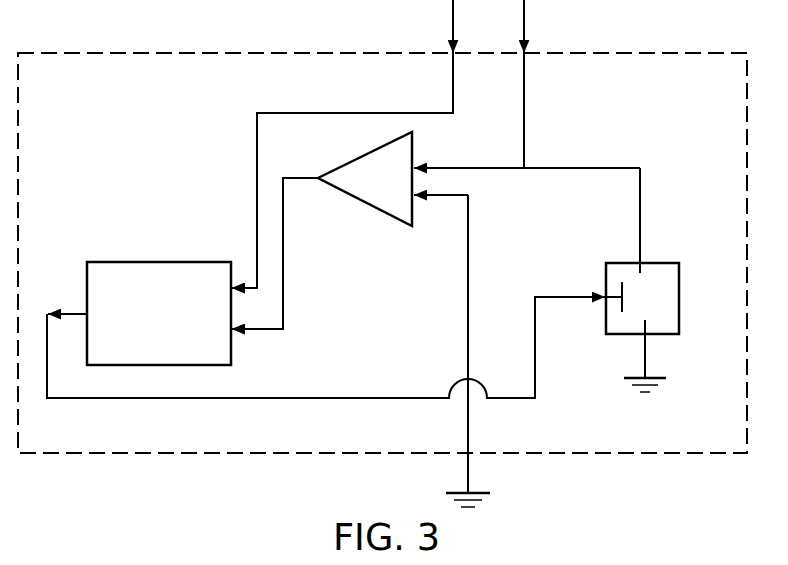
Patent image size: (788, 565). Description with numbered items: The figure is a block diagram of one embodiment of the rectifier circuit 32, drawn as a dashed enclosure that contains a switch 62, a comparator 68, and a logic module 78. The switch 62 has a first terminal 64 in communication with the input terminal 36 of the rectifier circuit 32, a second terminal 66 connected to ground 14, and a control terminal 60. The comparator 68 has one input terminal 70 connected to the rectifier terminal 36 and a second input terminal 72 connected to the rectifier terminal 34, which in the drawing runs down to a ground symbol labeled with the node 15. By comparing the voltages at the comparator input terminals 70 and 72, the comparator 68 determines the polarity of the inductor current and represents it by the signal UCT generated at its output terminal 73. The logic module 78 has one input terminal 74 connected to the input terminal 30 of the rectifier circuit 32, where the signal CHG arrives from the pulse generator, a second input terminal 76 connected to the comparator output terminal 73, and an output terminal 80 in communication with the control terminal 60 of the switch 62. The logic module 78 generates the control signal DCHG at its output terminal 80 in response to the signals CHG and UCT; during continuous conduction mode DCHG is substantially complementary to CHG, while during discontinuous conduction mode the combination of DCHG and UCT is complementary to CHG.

The ground 14 is at (658, 390).
The ground voltage node VGNG 15 is at (483, 501).
The input terminal of the rectifier circuit 30 is at (452, 50).
The rectifier circuit 32 is at (53, 443).
The rectifier terminal 34 is at (466, 455).
The input terminal of the rectifier circuit 36 is at (525, 50).
The control terminal 60 is at (605, 299).
The switch 62 is at (657, 310).
The first terminal 64 is at (641, 262).
The second terminal 66 is at (647, 336).
The comparator 68 is at (389, 195).
The input terminal 70 is at (414, 166).
The second input terminal 72 is at (414, 197).
The output terminal 73 is at (317, 177).
The input terminal 74 is at (256, 279).
The second input terminal 76 is at (232, 331).
The logic module 78 is at (172, 355).
The output terminal 80 is at (86, 311).